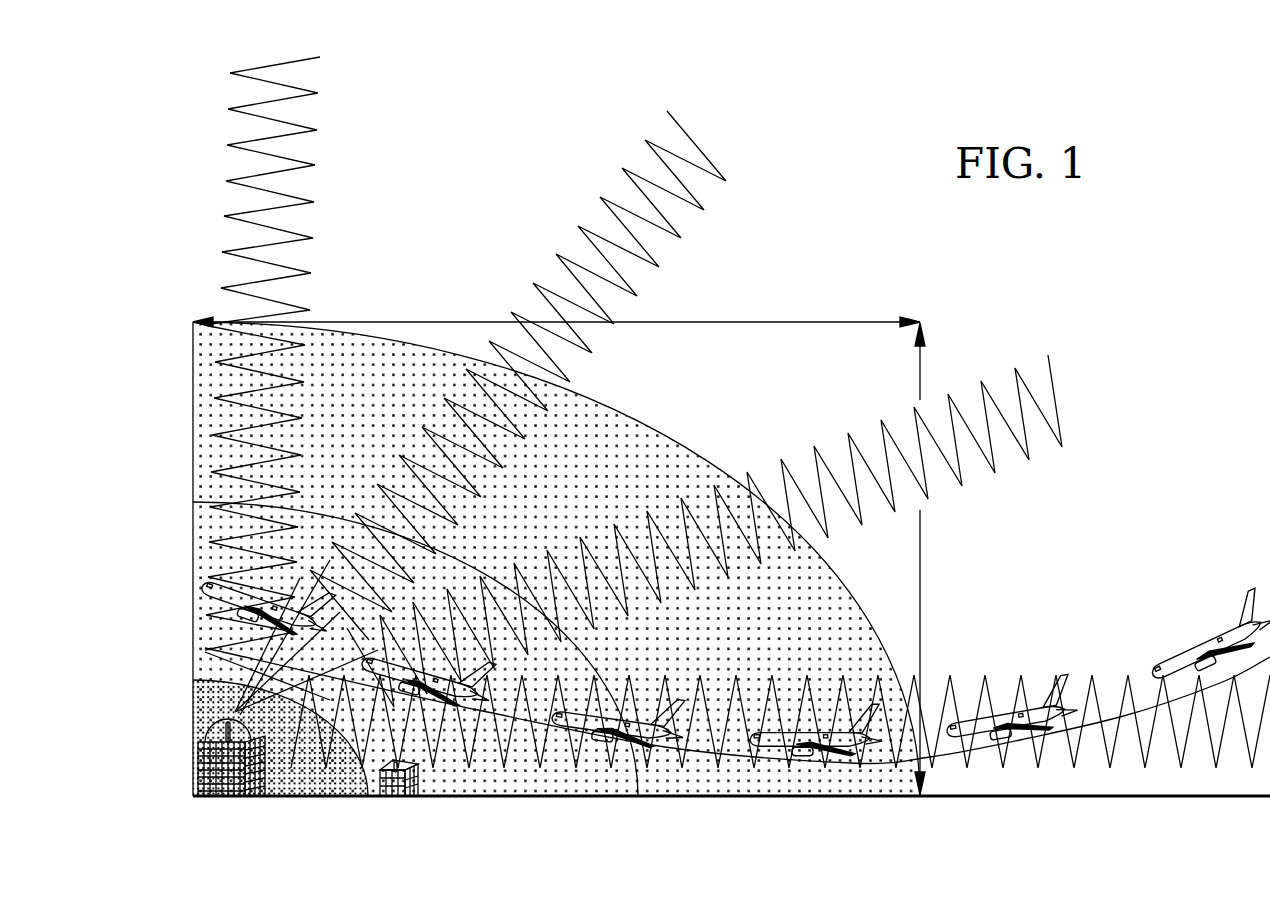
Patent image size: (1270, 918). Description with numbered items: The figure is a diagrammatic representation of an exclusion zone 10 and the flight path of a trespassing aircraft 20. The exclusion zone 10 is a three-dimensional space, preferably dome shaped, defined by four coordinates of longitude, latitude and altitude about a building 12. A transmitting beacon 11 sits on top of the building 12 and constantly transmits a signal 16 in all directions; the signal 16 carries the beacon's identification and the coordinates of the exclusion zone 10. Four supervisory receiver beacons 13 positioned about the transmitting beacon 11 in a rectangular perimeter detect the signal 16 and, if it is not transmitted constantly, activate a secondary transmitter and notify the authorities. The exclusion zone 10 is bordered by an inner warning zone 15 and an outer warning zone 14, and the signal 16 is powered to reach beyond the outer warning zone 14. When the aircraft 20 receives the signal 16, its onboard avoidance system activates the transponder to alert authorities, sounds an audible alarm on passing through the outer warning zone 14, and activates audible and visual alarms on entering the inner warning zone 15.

The exclusion zone 10 is at (337, 770).
The transmitting beacon 11 is at (264, 748).
The building 12 is at (193, 773).
The supervisory receiver beacons 13 is at (211, 773).
The outer warning zone 14 is at (790, 778).
The inner warning zone 15 is at (509, 775).
The signal 16 is at (1078, 394).
The aircraft 20 is at (1010, 651).